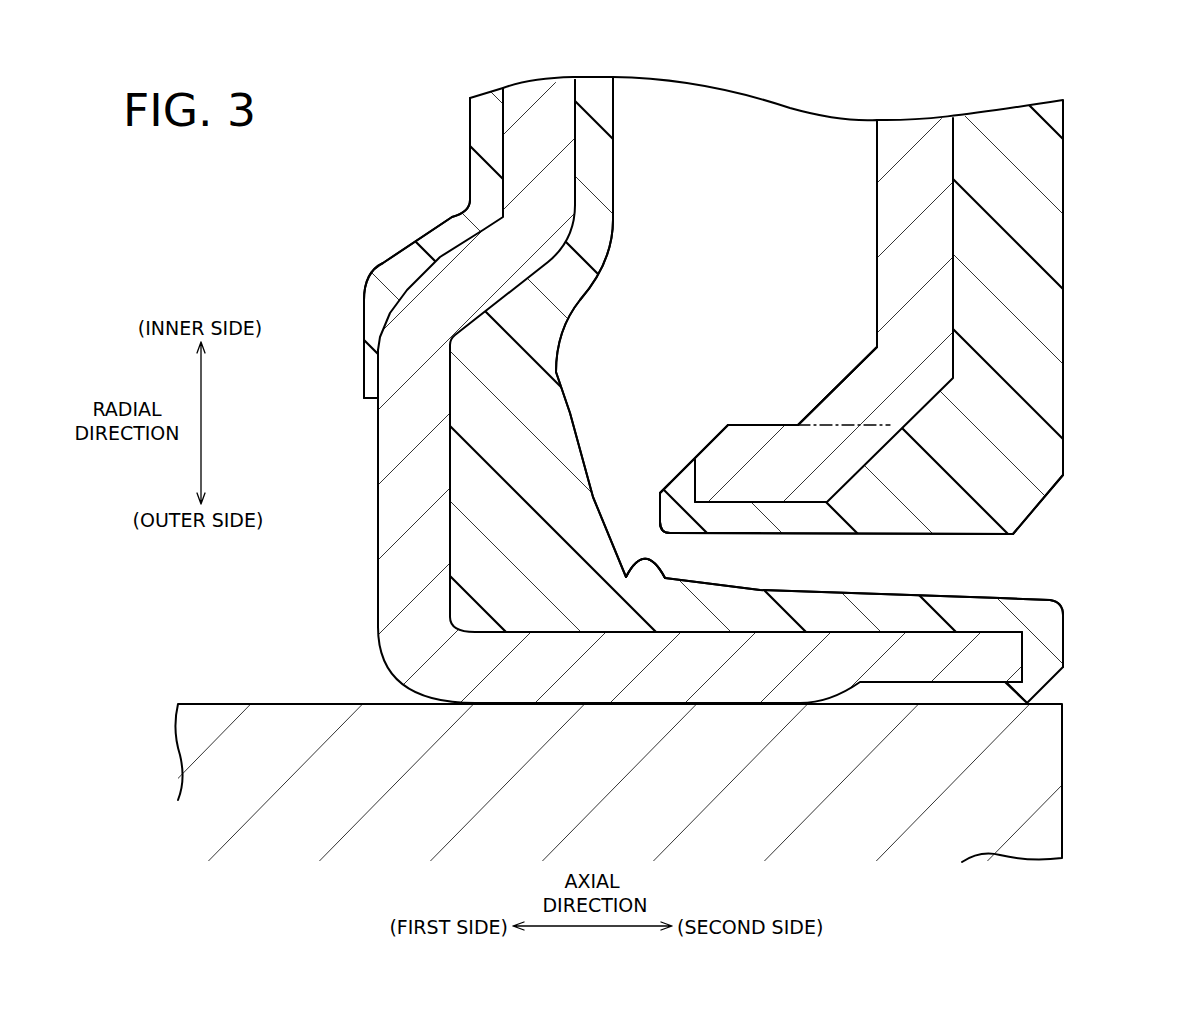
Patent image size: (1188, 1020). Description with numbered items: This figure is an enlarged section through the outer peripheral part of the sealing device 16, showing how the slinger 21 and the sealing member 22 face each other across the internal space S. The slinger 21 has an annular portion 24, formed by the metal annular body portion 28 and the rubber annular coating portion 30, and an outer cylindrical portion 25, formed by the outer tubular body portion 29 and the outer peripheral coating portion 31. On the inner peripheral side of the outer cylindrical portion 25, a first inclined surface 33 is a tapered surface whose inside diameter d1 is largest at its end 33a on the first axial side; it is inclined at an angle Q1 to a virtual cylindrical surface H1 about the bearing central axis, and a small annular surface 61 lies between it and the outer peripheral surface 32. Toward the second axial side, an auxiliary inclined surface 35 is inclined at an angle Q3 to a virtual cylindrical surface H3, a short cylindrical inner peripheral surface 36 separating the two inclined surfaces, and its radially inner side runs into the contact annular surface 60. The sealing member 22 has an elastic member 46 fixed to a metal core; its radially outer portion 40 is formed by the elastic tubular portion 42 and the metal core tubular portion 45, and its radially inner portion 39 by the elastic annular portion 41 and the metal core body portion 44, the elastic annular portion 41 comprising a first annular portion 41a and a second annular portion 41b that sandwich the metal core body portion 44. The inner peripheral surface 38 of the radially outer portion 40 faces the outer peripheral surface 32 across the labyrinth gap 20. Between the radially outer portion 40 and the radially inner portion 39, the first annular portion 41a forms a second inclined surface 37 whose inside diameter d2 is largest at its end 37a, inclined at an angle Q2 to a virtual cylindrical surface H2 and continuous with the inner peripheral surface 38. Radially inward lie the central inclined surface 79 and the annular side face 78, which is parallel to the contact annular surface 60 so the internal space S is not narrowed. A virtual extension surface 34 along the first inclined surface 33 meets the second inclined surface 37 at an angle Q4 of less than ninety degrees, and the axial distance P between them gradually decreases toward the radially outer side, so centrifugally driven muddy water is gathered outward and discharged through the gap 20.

The sealing device 16 is at (388, 667).
The gap 20 is at (594, 500).
The slinger 21 is at (594, 500).
The sealing member 22 is at (383, 251).
The annular portion 24 is at (594, 500).
The outer cylindrical portion 25 is at (915, 440).
The annular body portion 28 is at (1029, 153).
The outer tubular body portion 29 is at (818, 453).
The annular coating portion 30 is at (1025, 202).
The outer peripheral coating portion 31 is at (817, 523).
The outer peripheral surface 32 is at (870, 535).
The first inclined surface 33 is at (697, 457).
The end 33a is at (660, 490).
The virtual extension surface 34 is at (630, 520).
The auxiliary inclined surface 35 is at (860, 355).
The cylindrical inner peripheral surface 36 is at (758, 422).
The second inclined surface 37 is at (587, 463).
The end 37a is at (663, 600).
The inner peripheral surface 38 is at (930, 600).
The radially inner portion 39 is at (594, 500).
The radially outer portion 40 is at (700, 642).
The elastic annular portion 41 is at (537, 313).
The first annular portion 41a is at (600, 180).
The second annular portion 41b is at (430, 247).
The elastic tubular portion 42 is at (920, 618).
The metal core body portion 44 is at (537, 137).
The metal core tubular portion 45 is at (750, 683).
The elastic member 46 is at (553, 620).
The contact annular surface 60 is at (877, 155).
The small annular surface 61 is at (655, 522).
The side face 78 is at (613, 155).
The central inclined surface 79 is at (600, 300).
The internal space S is at (744, 212).
The distance P is at (708, 440).
The inside diameter d1 is at (660, 493).
The inside diameter d2 is at (625, 577).
The virtual cylindrical surface H1 is at (808, 495).
The virtual cylindrical surface H2 is at (340, 580).
The virtual cylindrical surface H3 is at (828, 402).
The angle Q1 is at (726, 444).
The angle Q2 is at (575, 566).
The angle Q3 is at (870, 362).
The angle Q4 is at (613, 542).